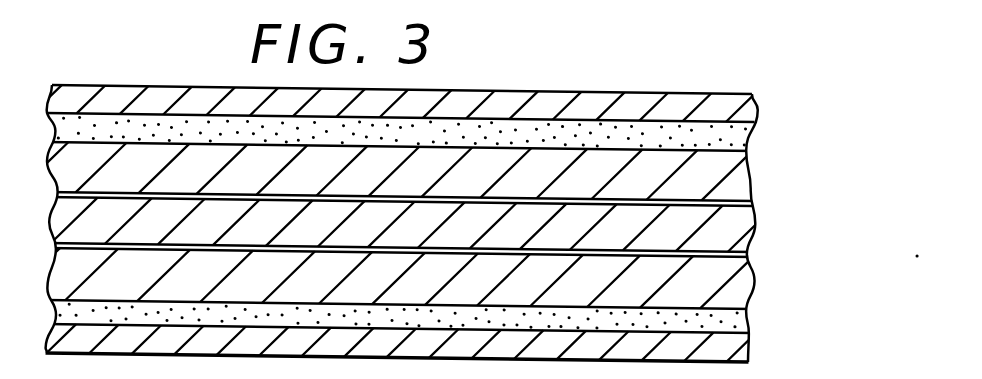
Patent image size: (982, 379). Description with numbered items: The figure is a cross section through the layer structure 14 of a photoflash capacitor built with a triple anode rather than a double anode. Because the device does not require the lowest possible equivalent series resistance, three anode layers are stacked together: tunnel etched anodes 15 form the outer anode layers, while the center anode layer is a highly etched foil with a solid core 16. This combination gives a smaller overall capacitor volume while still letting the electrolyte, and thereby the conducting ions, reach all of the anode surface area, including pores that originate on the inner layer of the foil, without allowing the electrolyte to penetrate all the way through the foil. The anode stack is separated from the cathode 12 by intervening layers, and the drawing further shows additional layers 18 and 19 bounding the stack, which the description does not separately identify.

The cathode 12 is at (737, 290).
The laminate 14 is at (724, 87).
The tunnel etched anode 15 is at (735, 185).
The highly etched foil with a solid core 16 is at (737, 238).
The adhesive layer 18 is at (745, 138).
The outer film layer 19 is at (747, 113).